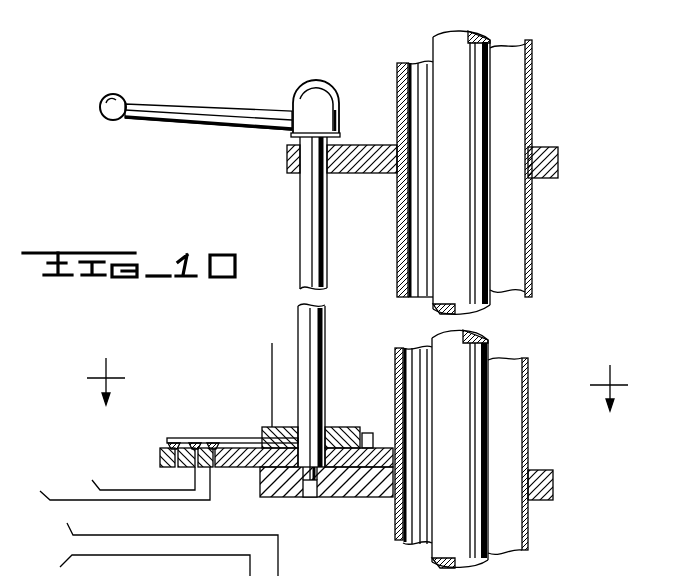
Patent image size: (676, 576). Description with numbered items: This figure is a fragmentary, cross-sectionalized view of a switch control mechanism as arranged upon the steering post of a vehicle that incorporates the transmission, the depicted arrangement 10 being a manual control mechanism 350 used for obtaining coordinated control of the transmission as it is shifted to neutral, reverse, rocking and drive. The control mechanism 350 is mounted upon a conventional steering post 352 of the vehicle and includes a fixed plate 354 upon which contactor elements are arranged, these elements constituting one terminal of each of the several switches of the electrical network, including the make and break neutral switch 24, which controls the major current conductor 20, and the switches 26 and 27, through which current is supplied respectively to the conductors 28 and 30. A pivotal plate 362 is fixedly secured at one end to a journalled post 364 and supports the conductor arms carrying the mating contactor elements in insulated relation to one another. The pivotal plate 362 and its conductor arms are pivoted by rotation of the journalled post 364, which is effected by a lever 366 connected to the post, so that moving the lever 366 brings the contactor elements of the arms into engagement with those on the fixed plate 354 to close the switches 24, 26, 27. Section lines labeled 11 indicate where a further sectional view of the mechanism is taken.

The cartridge assembly 10 is at (271, 366).
The section line 11- 11 is at (357, 376).
The major current conductor 20 is at (175, 467).
The neutral switch 24 is at (172, 440).
The switch 26 is at (195, 443).
The switch 27 is at (216, 443).
The conductor 28 is at (151, 521).
The conductor 30 is at (148, 521).
The manual control mechanism 350 is at (337, 254).
The steering post 352 is at (531, 244).
The fixed plate 354 is at (245, 470).
The pivotal plate 362 is at (356, 418).
The journalled post 364 is at (336, 362).
The lever 366 is at (202, 115).